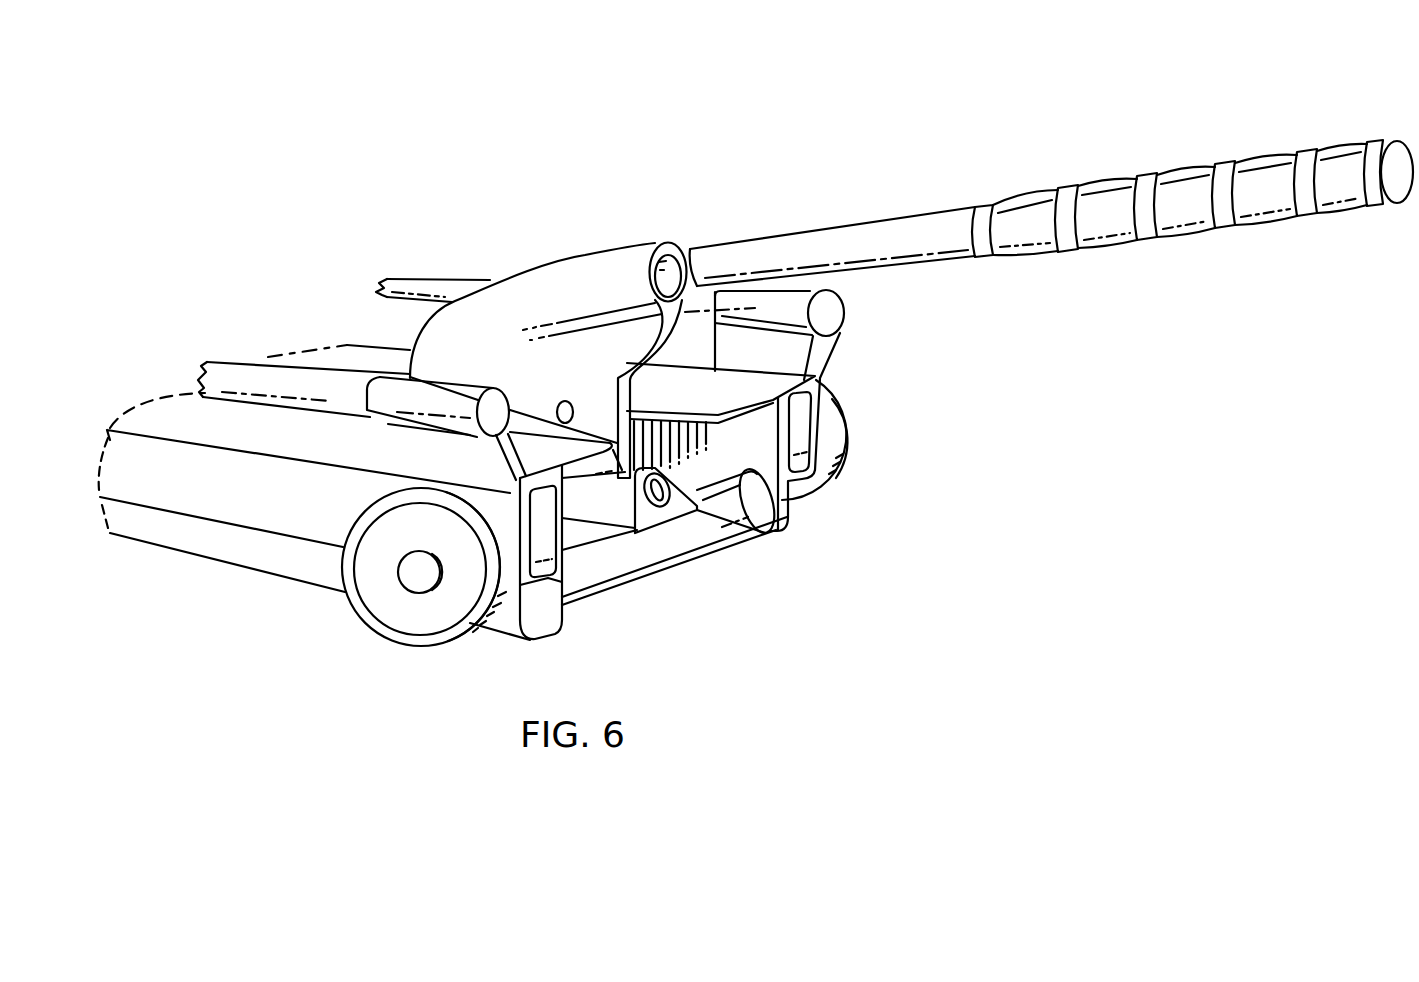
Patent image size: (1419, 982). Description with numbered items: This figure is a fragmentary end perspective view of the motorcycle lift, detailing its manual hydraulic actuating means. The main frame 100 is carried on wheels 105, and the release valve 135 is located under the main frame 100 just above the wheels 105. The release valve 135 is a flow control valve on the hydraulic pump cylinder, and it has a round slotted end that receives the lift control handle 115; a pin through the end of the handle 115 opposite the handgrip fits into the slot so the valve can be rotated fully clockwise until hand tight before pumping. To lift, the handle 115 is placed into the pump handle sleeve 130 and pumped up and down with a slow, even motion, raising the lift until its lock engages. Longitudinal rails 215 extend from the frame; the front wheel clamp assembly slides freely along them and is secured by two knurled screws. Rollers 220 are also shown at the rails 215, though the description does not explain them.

The main frame 100 is at (163, 412).
The wheels 105 is at (399, 646).
The handle 115 is at (1066, 190).
The pump handle sleeve 130 is at (567, 258).
The release valve 135 is at (662, 500).
The longitudinal rails 215 is at (237, 377).
The rollers 220 is at (383, 417).